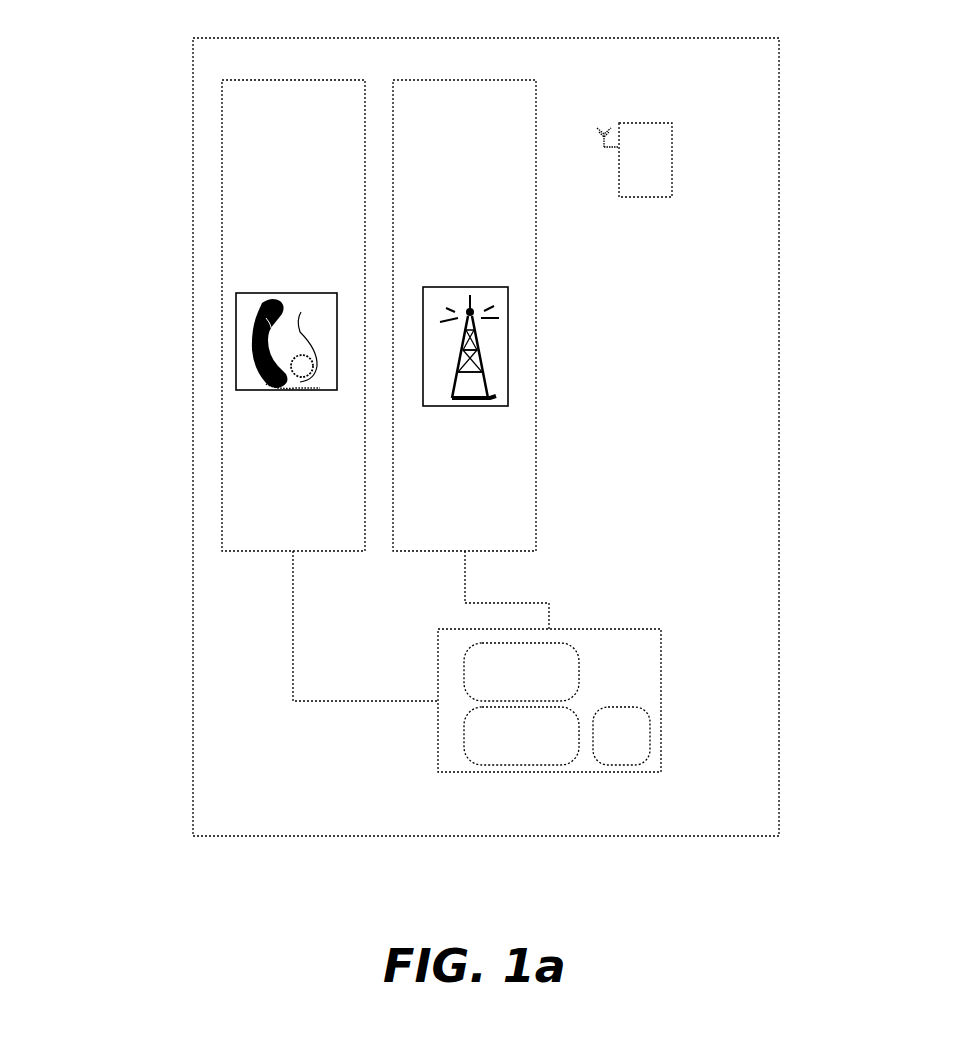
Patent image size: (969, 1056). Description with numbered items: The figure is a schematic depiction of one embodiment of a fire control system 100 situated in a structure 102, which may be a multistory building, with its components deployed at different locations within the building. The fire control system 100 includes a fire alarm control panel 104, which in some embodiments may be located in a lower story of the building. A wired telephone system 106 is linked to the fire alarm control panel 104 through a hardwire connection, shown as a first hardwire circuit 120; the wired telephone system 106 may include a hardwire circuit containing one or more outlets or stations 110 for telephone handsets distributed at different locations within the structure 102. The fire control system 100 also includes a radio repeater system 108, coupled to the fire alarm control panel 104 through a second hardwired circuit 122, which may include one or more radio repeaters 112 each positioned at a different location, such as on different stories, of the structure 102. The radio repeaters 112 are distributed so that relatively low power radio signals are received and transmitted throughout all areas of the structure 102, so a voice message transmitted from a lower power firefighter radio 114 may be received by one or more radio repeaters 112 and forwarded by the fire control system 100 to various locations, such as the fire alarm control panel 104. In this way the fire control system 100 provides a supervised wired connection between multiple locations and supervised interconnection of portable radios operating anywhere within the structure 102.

The fire control system 100 is at (157, 207).
The structure 102 is at (779, 437).
The fire alarm control panel 104 is at (661, 700).
The wired telephone system 106 is at (295, 80).
The radio repeater system 108 is at (465, 80).
The station for telephone handsets 110 is at (236, 350).
The radio repeater 112 is at (508, 337).
The firefighter radio 114 is at (672, 160).
The first hardwire circuit 120 is at (293, 665).
The second hardwired circuit 122 is at (514, 603).